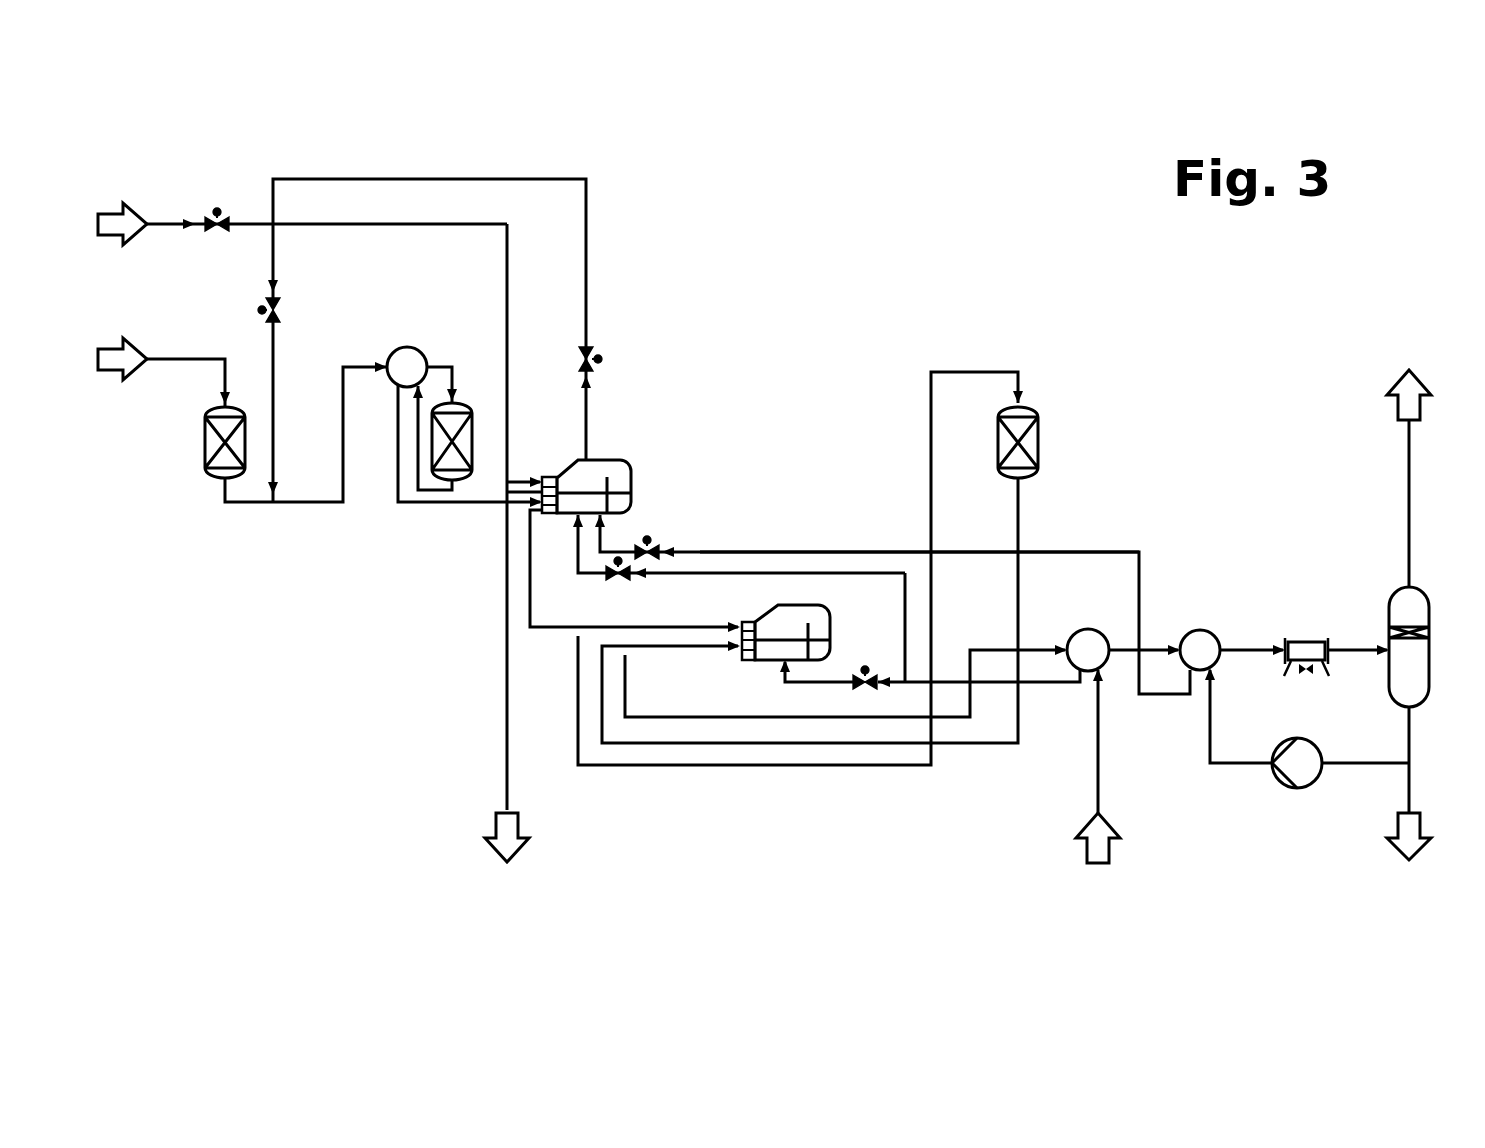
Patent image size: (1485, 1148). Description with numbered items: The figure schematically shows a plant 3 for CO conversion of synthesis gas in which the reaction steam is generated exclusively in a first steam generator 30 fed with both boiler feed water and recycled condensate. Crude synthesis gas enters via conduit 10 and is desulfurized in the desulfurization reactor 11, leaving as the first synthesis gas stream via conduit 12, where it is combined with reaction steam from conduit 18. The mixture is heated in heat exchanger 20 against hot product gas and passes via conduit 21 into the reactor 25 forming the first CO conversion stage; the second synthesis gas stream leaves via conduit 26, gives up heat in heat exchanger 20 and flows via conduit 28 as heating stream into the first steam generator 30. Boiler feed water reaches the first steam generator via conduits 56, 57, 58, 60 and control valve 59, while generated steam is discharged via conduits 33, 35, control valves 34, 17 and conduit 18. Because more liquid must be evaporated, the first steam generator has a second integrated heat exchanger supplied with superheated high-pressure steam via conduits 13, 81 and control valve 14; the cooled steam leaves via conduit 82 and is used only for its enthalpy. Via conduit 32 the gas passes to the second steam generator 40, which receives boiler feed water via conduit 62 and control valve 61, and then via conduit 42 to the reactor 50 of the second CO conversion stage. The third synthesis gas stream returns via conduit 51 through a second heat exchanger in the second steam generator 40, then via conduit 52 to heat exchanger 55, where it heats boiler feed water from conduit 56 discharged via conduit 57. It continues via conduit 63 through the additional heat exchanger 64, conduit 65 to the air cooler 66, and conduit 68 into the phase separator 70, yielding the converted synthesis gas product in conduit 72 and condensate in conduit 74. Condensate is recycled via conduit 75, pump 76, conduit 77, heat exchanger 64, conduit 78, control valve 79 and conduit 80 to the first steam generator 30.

The plant 3 is at (372, 749).
The conduit 10 is at (164, 362).
The desulfurization reactor 11 is at (201, 442).
The conduit 12 is at (306, 454).
The conduit 13 is at (302, 210).
The control valve 14 is at (217, 203).
The control valve 17 is at (292, 306).
The conduit 18 is at (275, 437).
The heat exchanger 20 is at (406, 345).
The conduit 21 is at (450, 383).
The reactor (first CO conversion stage) 25 is at (440, 475).
The conduit 26 is at (415, 490).
The conduit 28 is at (470, 466).
The first steam generator 30 is at (607, 484).
The conduit 32 is at (530, 627).
The conduit 33 is at (588, 455).
The control valve 34 is at (568, 364).
The conduit 35 is at (432, 294).
The second steam generator 40 is at (786, 632).
The conduit 42 is at (578, 727).
The reactor (second CO conversion stage) 50 is at (1040, 442).
The conduit 51 is at (1021, 535).
The conduit 52 is at (630, 695).
The heat exchanger 55 is at (1088, 633).
The conduit 56 is at (1111, 766).
The conduit 57 is at (1057, 686).
The conduit 58 is at (905, 638).
The control valve 59 is at (620, 584).
The conduit 60 is at (734, 561).
The control valve 61 is at (865, 695).
The conduit 62 is at (817, 683).
The conduit 63 is at (1152, 645).
The heat exchanger 64 is at (1200, 633).
The conduit 65 is at (1252, 634).
The air cooler 66 is at (1306, 640).
The conduit 68 is at (1367, 657).
The phase separator 70 is at (1432, 647).
The conduit 72 is at (1424, 478).
The conduit 74 is at (1424, 783).
The conduit 75 is at (1365, 785).
The pump 76 is at (1297, 786).
The conduit 77 is at (1238, 737).
The conduit 78 is at (853, 548).
The control valve 79 is at (667, 548).
The conduit 80 is at (605, 550).
The conduit 81 is at (502, 517).
The conduit 82 is at (494, 804).